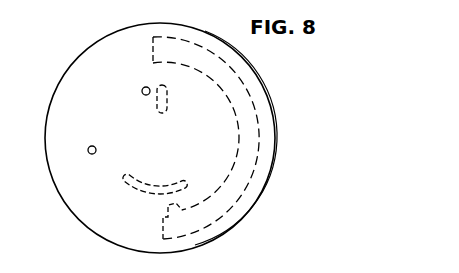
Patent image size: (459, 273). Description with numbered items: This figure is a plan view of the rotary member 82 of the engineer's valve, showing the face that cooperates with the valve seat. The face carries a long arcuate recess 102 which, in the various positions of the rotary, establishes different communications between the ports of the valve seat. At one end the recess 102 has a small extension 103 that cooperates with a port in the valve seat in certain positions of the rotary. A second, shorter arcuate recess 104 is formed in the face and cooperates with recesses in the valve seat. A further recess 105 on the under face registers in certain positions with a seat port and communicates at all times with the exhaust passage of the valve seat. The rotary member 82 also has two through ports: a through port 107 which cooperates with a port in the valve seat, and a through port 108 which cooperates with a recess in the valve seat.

The rotary member 82 is at (47, 121).
The recess 102 is at (240, 172).
The small extension 103 is at (173, 205).
The recess 104 is at (158, 182).
The recess 105 is at (168, 103).
The through port 107 is at (143, 87).
The through port 108 is at (93, 146).